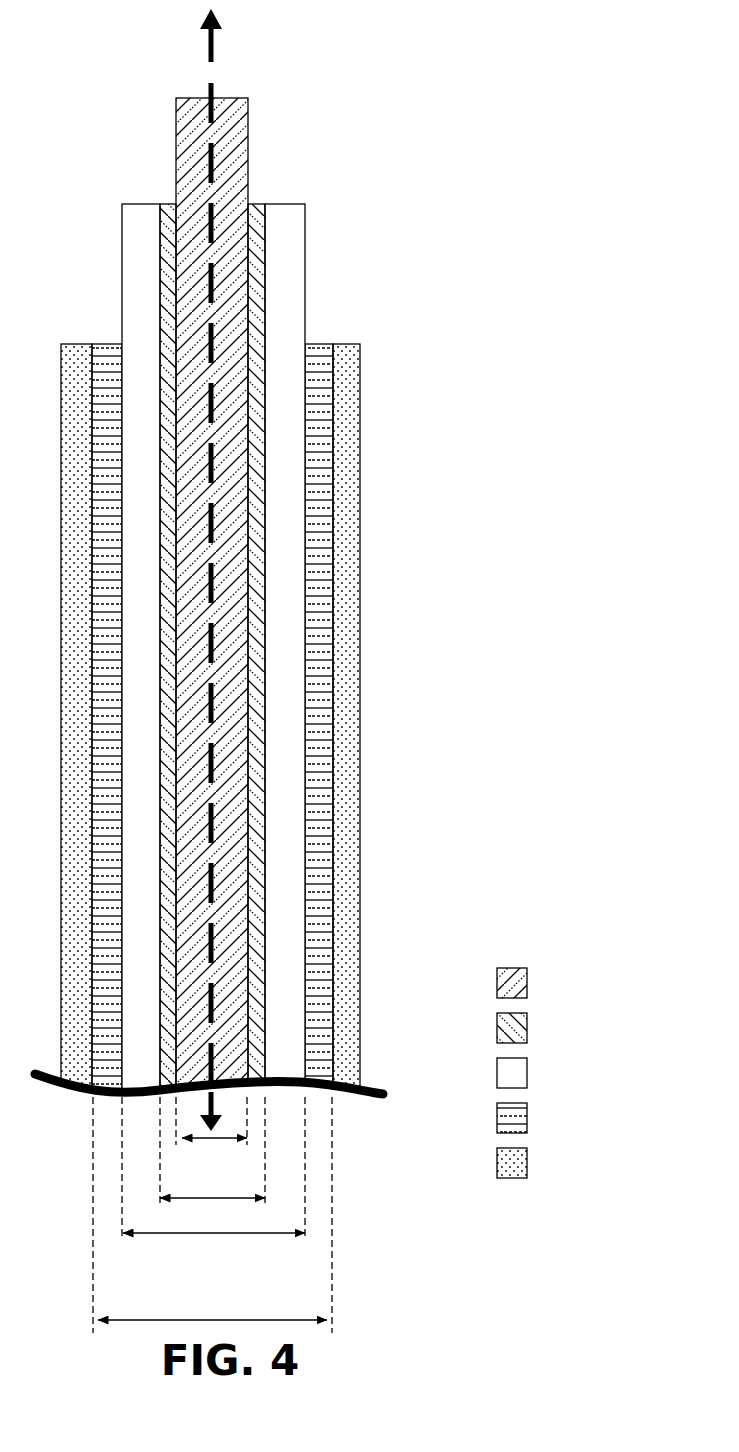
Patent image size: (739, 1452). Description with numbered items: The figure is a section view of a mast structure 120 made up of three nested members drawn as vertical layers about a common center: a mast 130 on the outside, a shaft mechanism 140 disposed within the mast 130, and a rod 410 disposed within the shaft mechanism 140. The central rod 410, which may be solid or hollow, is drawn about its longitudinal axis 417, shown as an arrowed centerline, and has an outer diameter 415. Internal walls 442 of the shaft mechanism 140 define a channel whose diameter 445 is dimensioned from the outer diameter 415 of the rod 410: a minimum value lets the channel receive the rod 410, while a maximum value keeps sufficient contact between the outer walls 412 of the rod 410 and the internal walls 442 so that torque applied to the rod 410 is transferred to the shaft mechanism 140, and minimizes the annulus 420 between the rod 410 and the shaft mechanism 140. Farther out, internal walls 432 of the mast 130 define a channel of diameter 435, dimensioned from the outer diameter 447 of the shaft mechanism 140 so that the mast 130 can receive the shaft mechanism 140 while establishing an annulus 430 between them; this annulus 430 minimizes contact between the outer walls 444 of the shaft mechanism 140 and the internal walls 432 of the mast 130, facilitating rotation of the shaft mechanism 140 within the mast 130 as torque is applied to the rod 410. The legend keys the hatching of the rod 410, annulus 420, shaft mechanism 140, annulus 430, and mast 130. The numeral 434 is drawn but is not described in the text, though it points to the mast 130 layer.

The mast structure 120 is at (317, 556).
The outer walls of rod 412 is at (251, 151).
The internal walls of shaft mechanism 442 is at (268, 238).
The outer walls of shaft mechanism 444 is at (309, 283).
The internal walls of mast 432 is at (336, 378).
The outer layer 434 is at (364, 452).
The longitudinal axis of rod 417 is at (214, 46).
The outer diameter of rod 415 is at (221, 1141).
The diameter of shaft mechanism channel 445 is at (204, 1197).
The outer diameter of shaft mechanism 447 is at (249, 1236).
The diameter of mast channel 435 is at (226, 1318).
The rod 410 is at (528, 982).
The annulus between rod and shaft mechanism 420 is at (528, 1027).
The shaft mechanism 140 is at (528, 1073).
The annulus between mast and shaft mechanism 430 is at (528, 1118).
The mast 130 is at (528, 1163).